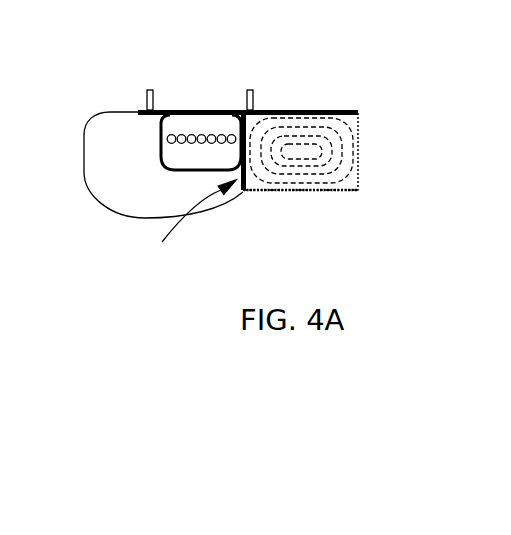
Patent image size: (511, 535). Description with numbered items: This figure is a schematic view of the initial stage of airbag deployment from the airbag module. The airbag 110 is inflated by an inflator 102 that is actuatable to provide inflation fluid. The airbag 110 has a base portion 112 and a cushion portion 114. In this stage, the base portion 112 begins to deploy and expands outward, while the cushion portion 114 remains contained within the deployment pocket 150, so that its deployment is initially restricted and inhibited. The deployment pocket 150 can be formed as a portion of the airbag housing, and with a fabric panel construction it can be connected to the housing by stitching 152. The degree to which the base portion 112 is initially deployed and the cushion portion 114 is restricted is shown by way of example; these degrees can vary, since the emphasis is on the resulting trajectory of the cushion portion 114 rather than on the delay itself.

The inflator 102 is at (195, 125).
The airbag 110 is at (241, 190).
The base portion 112 is at (137, 188).
The cushion portion 114 is at (308, 183).
The deployment pocket 150 is at (357, 111).
The stitching 152 is at (181, 221).